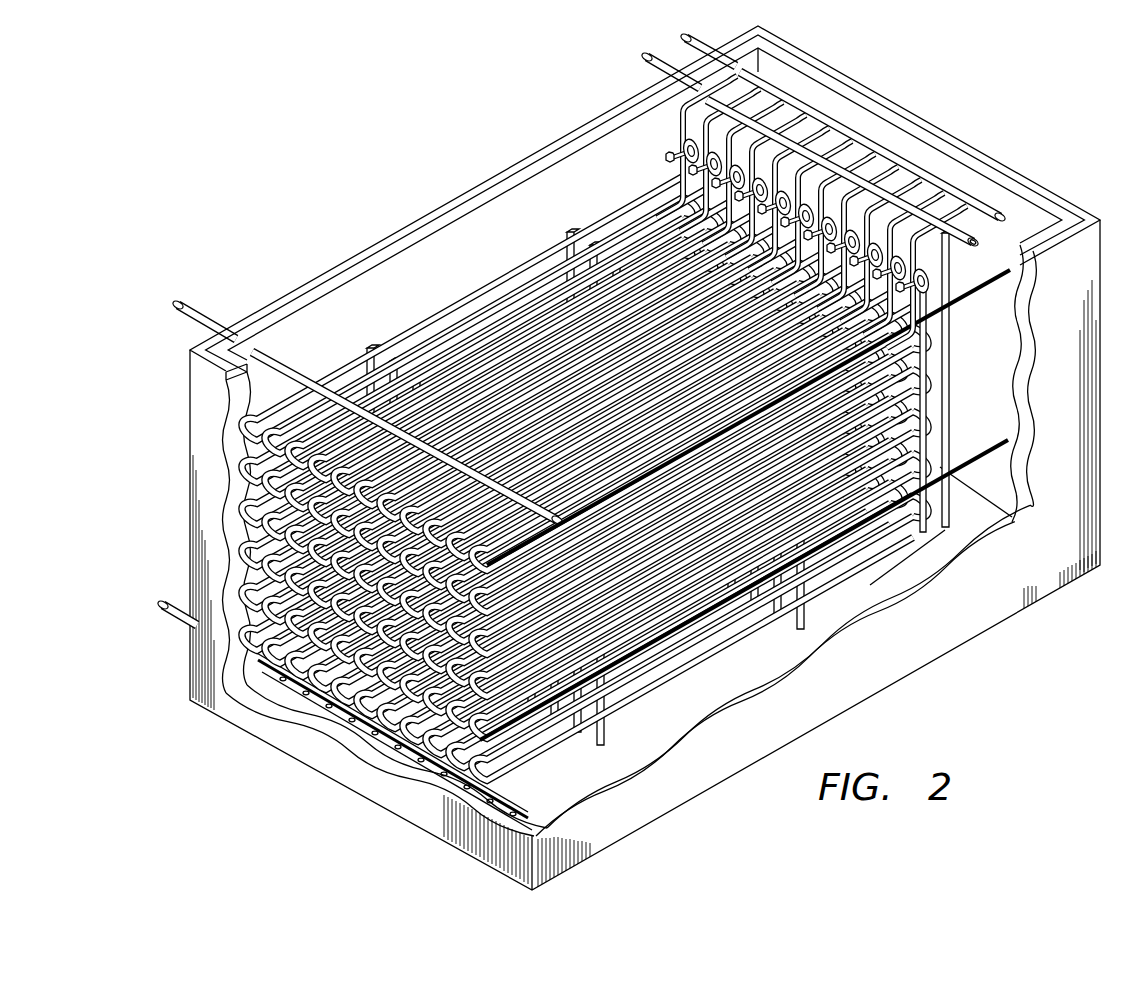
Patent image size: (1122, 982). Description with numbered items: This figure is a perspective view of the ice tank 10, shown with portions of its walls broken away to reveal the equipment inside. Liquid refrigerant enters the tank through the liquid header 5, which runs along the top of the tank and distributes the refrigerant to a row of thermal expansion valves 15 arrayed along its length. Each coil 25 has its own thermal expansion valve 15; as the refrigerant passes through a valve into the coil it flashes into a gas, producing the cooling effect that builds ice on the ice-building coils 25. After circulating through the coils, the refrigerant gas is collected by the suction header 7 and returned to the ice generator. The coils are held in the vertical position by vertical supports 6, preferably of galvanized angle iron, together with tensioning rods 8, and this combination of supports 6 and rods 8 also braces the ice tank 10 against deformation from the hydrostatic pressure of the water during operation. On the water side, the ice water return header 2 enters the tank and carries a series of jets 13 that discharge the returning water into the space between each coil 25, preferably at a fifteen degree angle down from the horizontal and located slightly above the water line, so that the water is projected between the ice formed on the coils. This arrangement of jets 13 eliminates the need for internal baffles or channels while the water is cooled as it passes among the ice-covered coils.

The ice water return header 2 is at (198, 313).
The liquid header 5 is at (987, 208).
The vertical supports 6 is at (798, 626).
The suction header 7 is at (960, 246).
The tensioning rods 8 is at (970, 290).
The ice tank 10 is at (436, 160).
The jets 13 is at (295, 358).
The thermal expansion valves 15 is at (683, 153).
The coils 25 is at (511, 303).